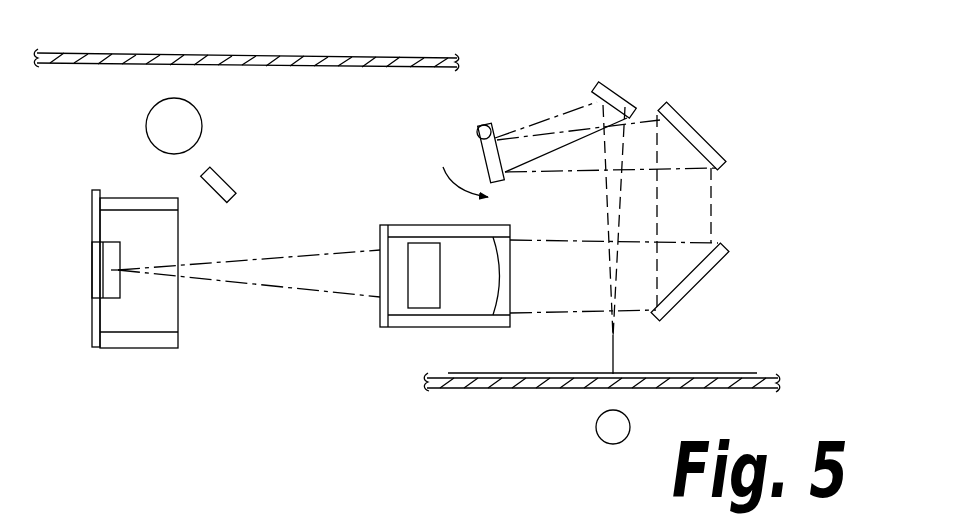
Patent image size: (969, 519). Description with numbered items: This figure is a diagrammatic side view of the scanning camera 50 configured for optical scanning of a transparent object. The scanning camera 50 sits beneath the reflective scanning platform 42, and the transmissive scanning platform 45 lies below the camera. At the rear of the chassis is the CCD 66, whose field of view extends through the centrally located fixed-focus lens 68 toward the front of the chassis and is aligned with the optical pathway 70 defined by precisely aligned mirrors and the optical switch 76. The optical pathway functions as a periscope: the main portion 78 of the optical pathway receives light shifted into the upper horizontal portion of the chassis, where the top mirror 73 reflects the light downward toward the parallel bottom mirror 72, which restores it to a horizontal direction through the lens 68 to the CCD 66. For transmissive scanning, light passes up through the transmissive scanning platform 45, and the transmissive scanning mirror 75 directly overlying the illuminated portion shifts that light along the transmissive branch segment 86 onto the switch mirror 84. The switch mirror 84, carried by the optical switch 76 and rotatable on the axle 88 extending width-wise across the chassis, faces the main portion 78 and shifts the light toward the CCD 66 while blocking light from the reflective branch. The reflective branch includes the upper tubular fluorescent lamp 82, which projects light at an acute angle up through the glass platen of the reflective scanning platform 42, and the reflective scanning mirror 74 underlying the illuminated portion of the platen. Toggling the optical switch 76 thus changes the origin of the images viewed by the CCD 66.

The reflective scanning platform 42 is at (437, 58).
The transmissive scanning platform 45 is at (768, 380).
The scanning camera 50 is at (730, 102).
The CCD 66 is at (130, 350).
The fixed-focus lens 68 is at (393, 325).
The optical pathway 70 is at (720, 210).
The bottom mirror 72 is at (698, 288).
The top mirror 73 is at (720, 150).
The reflective scanning mirror 74 is at (228, 178).
The transmissive scanning mirror 75 is at (618, 98).
The optical switch 76 is at (483, 117).
The main portion of the optical pathway 78 is at (298, 292).
The upper tubular fluorescent lamp 82 is at (145, 125).
The switch mirror 84 is at (482, 155).
The transmissive branch segment 86 is at (551, 118).
The axle 88 is at (477, 130).